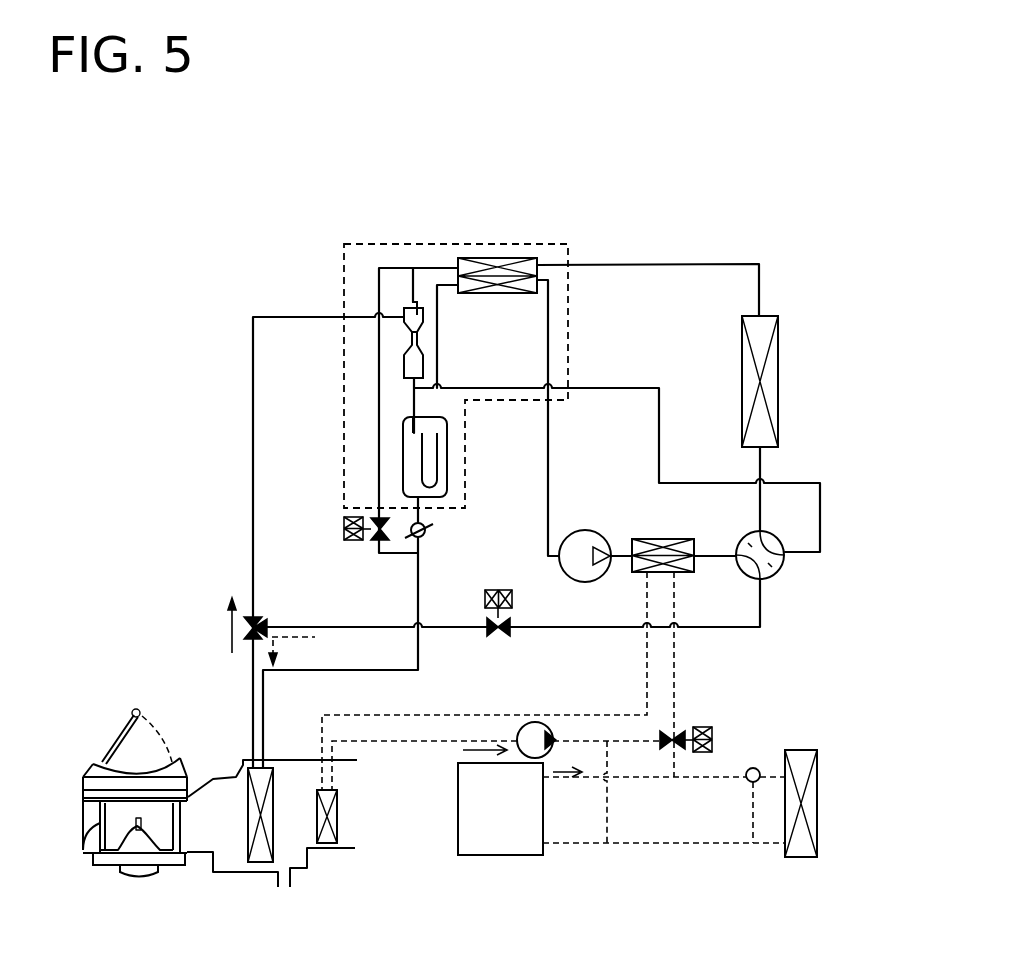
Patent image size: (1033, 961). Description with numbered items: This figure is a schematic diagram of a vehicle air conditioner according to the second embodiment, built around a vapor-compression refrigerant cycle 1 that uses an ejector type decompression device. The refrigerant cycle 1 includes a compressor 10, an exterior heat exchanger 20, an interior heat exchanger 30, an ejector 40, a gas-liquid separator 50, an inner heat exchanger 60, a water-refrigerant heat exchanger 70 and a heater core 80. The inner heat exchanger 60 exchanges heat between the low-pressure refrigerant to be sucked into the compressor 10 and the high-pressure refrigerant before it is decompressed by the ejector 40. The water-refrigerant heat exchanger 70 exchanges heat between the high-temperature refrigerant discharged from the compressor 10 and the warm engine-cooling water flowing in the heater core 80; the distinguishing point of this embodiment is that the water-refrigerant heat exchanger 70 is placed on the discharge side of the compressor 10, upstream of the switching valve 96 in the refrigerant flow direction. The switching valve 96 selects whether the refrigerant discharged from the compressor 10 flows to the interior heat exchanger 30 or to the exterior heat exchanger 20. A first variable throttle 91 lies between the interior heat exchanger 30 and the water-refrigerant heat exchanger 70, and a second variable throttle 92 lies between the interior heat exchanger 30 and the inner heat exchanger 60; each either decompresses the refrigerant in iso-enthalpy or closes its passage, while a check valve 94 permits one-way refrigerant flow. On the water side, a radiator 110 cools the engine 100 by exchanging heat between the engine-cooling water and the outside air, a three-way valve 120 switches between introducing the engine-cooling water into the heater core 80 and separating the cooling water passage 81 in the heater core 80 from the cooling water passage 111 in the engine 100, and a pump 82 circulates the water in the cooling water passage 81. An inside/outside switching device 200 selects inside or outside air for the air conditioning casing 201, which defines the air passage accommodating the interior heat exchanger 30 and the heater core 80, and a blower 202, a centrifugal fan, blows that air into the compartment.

The refrigerant cycle 1 is at (768, 269).
The compressor 10 is at (594, 532).
The exterior heat exchanger 20 is at (780, 385).
The interior heat exchanger 30 is at (245, 820).
The ejector 40 is at (423, 340).
The gas-liquid separator 50 is at (448, 455).
The inner heat exchanger 60 is at (493, 258).
The water-refrigerant heat exchanger 70 is at (670, 539).
The heater core 80 is at (338, 817).
The cooling water passage 81 is at (381, 743).
The pump 82 is at (513, 733).
The first variable throttle 91 is at (487, 622).
The second variable throttle 92 is at (372, 541).
The check valve 94 is at (428, 530).
The switching valve 96 is at (778, 573).
The engine 100 is at (502, 856).
The radiator 110 is at (802, 858).
The cooling water passage 111 is at (660, 844).
The three-way valve 120 is at (674, 731).
The inside/outside switching device 200 is at (103, 757).
The air conditioning casing 201 is at (300, 758).
The blower 202 is at (90, 854).